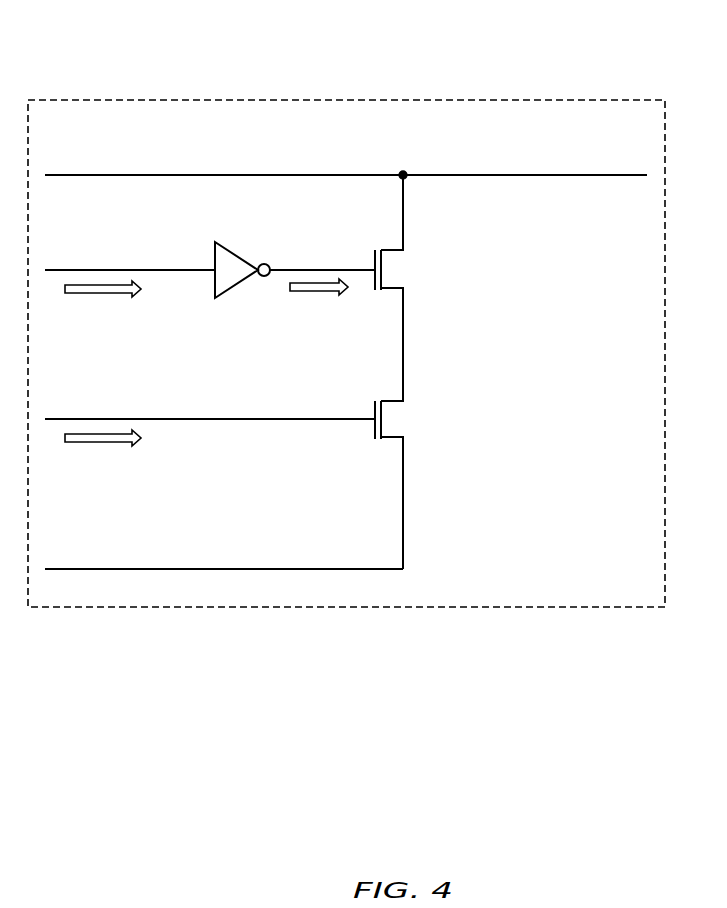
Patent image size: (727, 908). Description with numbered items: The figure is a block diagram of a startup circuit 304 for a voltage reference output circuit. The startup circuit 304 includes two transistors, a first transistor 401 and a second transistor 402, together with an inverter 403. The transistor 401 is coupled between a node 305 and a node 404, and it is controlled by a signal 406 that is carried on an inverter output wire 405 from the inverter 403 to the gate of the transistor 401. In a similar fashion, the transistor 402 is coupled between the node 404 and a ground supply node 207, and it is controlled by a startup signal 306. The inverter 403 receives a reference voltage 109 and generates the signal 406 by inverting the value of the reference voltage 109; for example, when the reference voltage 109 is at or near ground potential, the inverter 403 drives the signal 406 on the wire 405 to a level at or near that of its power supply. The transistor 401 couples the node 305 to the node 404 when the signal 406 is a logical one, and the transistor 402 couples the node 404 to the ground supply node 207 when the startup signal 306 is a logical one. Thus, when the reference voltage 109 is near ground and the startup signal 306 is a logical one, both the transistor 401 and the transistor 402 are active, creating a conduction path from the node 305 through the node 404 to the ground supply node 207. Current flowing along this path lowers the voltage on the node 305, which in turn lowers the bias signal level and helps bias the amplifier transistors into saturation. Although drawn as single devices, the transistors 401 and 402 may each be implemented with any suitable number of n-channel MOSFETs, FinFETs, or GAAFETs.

The startup circuit 304 is at (345, 98).
The node 305 is at (95, 175).
The reference voltage 109 is at (101, 298).
The inverter 403 is at (226, 244).
The inverter output wire 405 is at (308, 267).
The signal 406 is at (301, 296).
The transistor 401 is at (378, 249).
The transistor 402 is at (378, 399).
The node 404 is at (405, 345).
The startup signal 306 is at (101, 447).
The ground supply node 207 is at (224, 557).